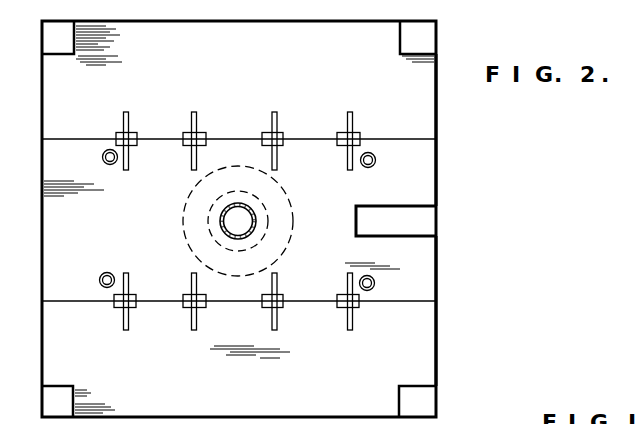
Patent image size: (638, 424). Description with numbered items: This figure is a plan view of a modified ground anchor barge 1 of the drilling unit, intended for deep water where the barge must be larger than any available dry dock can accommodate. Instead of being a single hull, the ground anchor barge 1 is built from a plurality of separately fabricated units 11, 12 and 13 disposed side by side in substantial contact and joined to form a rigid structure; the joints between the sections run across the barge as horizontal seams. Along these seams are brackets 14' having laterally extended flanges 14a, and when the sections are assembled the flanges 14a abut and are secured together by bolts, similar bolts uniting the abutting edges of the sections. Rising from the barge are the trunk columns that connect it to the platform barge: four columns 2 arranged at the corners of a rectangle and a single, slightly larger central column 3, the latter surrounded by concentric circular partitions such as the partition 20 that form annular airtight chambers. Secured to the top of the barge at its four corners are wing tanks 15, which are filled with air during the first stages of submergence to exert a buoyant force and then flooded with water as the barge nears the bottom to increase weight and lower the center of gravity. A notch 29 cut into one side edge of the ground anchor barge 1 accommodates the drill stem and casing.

The ground anchor barge 1 is at (57, 89).
The trunk columns 2 is at (103, 159).
The central column 3 is at (224, 236).
The barge unit 11 is at (417, 173).
The barge unit 12 is at (432, 370).
The barge unit 13 is at (420, 112).
The brackets 14' is at (238, 220).
The laterally extended flanges 14a is at (262, 143).
The wing tanks 15 is at (424, 43).
The circular partition 20 is at (280, 184).
The notch 29 is at (420, 223).